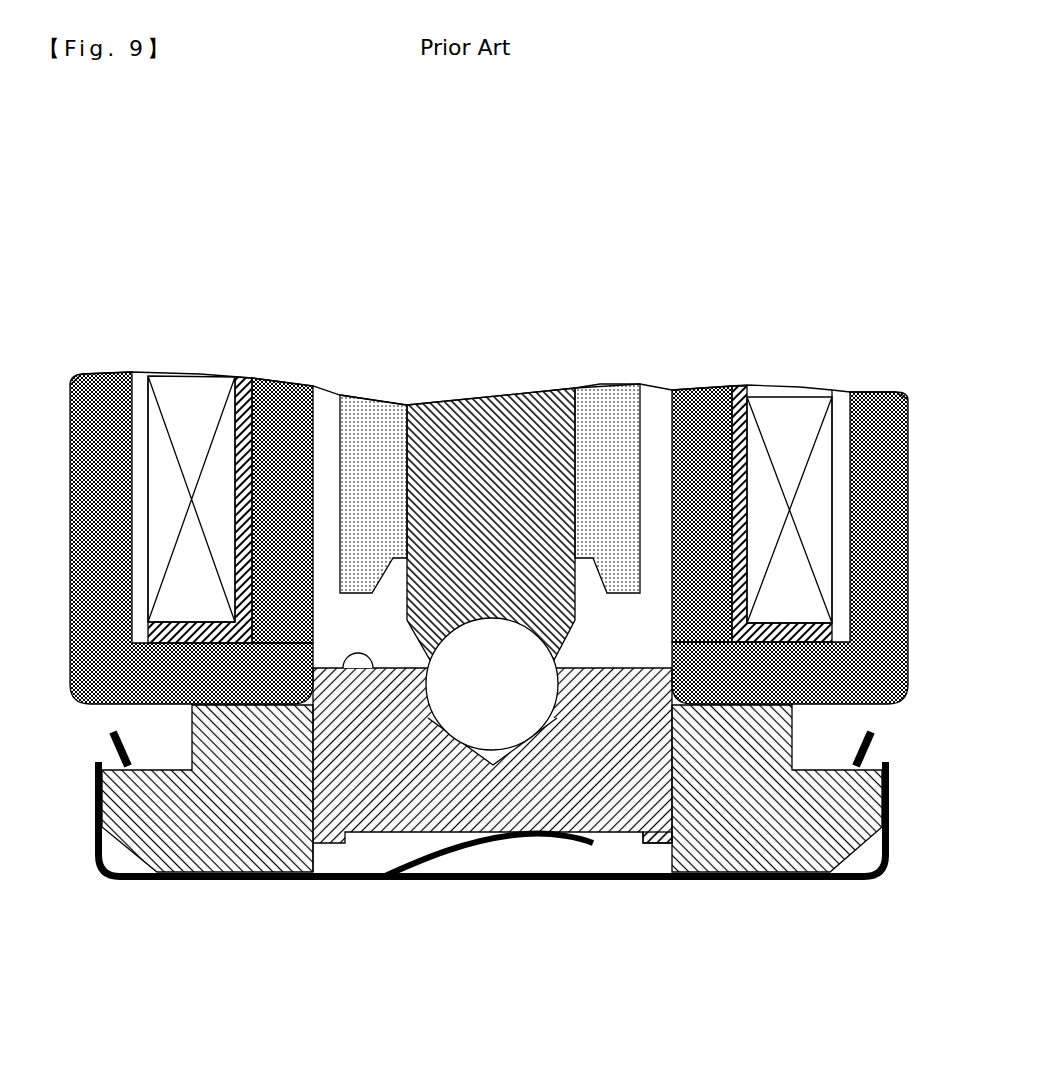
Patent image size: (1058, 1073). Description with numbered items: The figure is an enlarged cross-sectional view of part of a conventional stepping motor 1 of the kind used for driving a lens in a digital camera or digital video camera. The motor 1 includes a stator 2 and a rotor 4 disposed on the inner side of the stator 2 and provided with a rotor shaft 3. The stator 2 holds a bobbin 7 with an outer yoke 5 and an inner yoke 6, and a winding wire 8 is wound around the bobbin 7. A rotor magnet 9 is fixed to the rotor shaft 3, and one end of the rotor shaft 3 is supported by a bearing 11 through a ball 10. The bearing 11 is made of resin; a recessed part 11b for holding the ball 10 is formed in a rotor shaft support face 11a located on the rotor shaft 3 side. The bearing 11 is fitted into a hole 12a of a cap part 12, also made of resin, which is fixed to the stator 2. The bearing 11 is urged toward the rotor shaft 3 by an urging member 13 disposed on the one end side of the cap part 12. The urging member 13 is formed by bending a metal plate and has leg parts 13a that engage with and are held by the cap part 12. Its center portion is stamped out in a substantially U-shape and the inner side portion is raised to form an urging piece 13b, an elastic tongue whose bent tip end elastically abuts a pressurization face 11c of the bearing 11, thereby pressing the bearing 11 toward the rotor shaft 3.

The stepping motor 1 is at (414, 306).
The stator 2 is at (773, 352).
The rotor shaft 3 is at (498, 393).
The rotor 4 is at (650, 290).
The outer yoke 5 is at (100, 378).
The inner yoke 6 is at (302, 384).
The bobbin 7 is at (242, 378).
The winding wire 8 is at (166, 380).
The rotor magnet 9 is at (594, 385).
The ball 10 is at (513, 724).
The bearing 11 is at (663, 846).
The rotor shaft support face 11a is at (343, 672).
The recessed part 11b is at (430, 720).
The pressurization face 11c is at (615, 834).
The cap part 12 is at (240, 862).
The hole 12a is at (320, 862).
The urging member 13 is at (137, 893).
The leg part 13a is at (109, 740).
The urging piece 13b is at (543, 832).